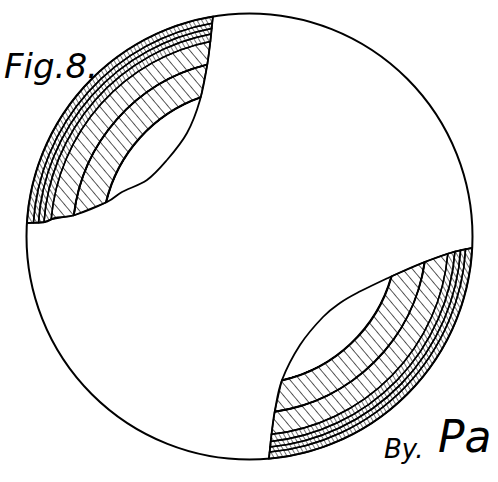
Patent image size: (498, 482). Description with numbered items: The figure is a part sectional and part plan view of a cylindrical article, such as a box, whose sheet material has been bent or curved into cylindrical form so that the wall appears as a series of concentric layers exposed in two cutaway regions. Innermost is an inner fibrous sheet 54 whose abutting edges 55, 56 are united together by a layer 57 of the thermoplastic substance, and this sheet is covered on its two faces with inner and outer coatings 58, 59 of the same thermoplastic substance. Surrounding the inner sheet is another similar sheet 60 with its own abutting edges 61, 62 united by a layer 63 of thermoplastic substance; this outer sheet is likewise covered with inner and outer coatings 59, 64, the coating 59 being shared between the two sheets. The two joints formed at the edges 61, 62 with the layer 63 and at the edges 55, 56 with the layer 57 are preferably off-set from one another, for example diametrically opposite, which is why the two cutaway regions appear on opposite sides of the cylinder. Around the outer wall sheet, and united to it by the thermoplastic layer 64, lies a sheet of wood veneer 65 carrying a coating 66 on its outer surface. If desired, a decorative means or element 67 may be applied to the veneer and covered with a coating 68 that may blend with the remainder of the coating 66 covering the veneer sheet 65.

The inner fibrous sheet 54 is at (207, 75).
The abutting edge 55 is at (377, 338).
The abutting edge 56 is at (350, 362).
The layer of thermoplastic substance 57 is at (360, 347).
The inner coating 58 is at (116, 161).
The outer coating 59 is at (83, 188).
The outer sheet 60 is at (214, 44).
The abutting edge 61 is at (196, 98).
The abutting edge 62 is at (127, 130).
The layer of thermoplastic substance 63 is at (158, 117).
The outer coating 64 is at (38, 182).
The sheet of wood veneer 65 is at (43, 160).
The coating 66 is at (50, 140).
The decorative means or element 67 is at (115, 60).
The coating 68 is at (128, 50).